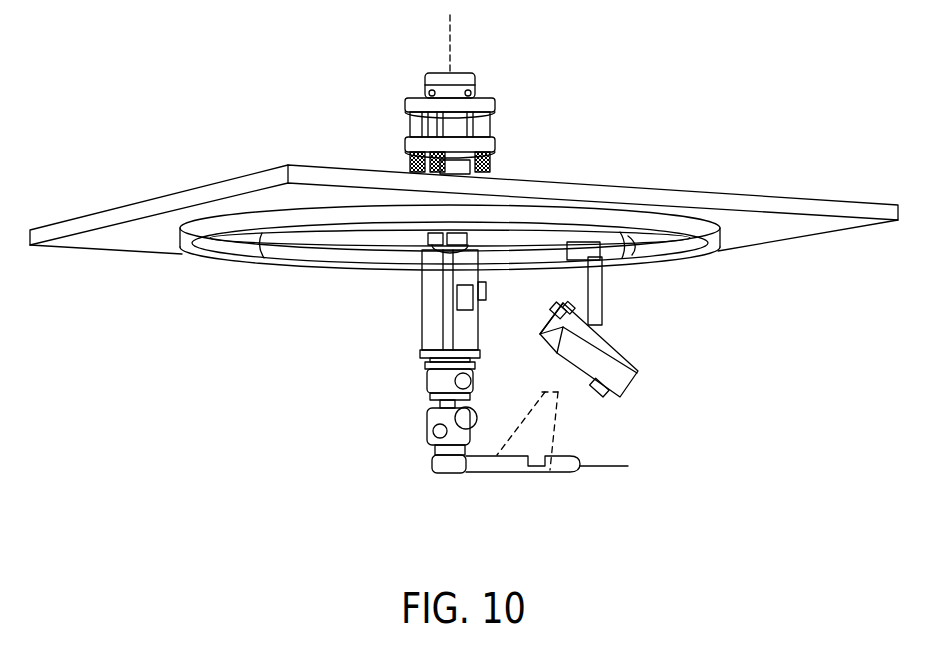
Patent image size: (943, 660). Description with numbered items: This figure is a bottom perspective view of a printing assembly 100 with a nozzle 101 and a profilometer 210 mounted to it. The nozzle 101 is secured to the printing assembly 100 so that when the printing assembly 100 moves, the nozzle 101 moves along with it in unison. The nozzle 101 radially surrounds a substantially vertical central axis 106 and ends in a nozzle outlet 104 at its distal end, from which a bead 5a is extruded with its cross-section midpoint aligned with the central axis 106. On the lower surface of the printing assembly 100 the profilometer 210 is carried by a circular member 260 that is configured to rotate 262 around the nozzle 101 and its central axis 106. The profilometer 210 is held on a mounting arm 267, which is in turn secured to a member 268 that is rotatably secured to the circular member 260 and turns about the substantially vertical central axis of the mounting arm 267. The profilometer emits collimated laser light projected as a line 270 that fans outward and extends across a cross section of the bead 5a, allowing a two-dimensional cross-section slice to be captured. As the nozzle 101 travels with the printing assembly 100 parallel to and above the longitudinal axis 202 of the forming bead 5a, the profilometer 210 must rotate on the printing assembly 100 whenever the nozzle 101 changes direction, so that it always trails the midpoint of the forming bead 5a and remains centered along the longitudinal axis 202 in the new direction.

The printing assembly 100 is at (800, 198).
The nozzle 101 is at (422, 318).
The nozzle outlet 104 is at (433, 450).
The central axis 106 is at (455, 47).
The longitudinal axis 202 is at (598, 463).
The profilometer 210 is at (625, 357).
The circular member 260 is at (620, 228).
The rotation 262 is at (657, 245).
The mounting arm 267 is at (602, 303).
The member 268 is at (587, 245).
The line 270 is at (527, 478).
The bead 5a is at (563, 473).